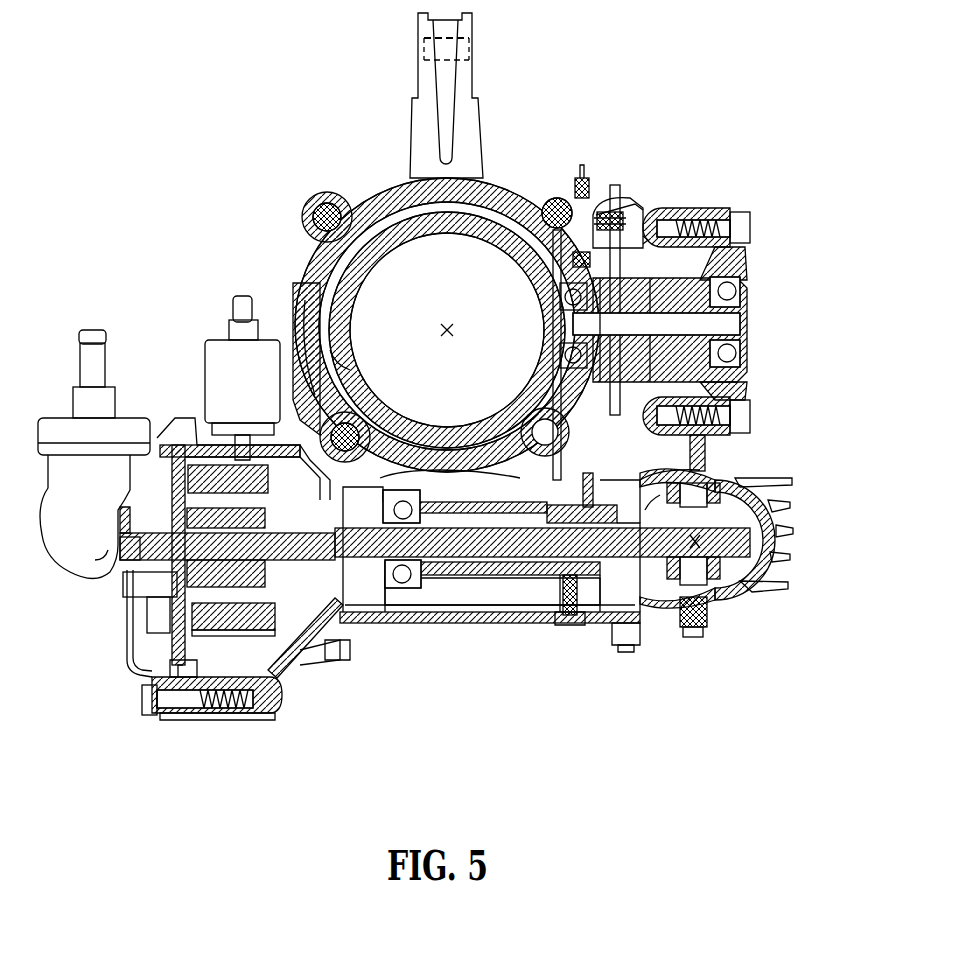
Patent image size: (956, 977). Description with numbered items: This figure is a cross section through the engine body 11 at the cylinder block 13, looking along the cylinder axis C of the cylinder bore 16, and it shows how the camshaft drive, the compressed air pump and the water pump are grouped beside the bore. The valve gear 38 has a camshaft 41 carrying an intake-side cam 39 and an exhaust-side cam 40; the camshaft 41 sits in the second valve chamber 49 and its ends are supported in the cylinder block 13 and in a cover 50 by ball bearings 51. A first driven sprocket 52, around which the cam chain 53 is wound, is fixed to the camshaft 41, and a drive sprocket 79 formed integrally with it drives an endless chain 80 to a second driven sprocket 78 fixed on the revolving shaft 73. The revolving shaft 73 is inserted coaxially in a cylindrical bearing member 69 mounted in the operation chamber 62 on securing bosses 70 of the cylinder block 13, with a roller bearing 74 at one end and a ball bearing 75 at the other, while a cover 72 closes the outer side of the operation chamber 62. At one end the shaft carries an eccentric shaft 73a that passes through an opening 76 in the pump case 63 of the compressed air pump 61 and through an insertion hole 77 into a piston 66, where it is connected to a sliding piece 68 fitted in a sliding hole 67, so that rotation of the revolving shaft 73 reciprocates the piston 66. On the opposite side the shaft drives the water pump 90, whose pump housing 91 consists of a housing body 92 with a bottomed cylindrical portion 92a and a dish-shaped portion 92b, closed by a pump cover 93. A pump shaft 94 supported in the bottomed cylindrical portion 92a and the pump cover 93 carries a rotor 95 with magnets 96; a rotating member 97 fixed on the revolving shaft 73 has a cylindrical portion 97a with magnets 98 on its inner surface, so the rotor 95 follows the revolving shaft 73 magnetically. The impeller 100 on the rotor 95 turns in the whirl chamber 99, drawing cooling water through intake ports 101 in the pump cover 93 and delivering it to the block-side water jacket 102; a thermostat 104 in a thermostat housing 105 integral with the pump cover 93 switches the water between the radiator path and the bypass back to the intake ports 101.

The engine body 11 is at (494, 176).
The cylinder block 13 is at (360, 195).
The cylinder bore 16 is at (375, 268).
The valve gear 38 is at (640, 208).
The intake-side cam 39 is at (655, 240).
The exhaust-side cam 40 is at (752, 383).
The camshaft 41 is at (703, 212).
The second valve chamber 49 is at (592, 205).
The cover 50 is at (745, 275).
The ball bearings 51 is at (735, 355).
The first driven sprocket 52 is at (612, 210).
The cam chain 53 is at (634, 272).
The compressed air pump 61 is at (748, 596).
The operation chamber 62 is at (495, 610).
The pump case 63 is at (748, 482).
The piston 66 is at (755, 562).
The sliding hole 67 is at (722, 488).
The sliding piece 68 is at (762, 506).
The bearing member 69 is at (525, 580).
The securing bosses 70 is at (445, 470).
The cover 72 is at (412, 615).
The revolving shaft 73 is at (450, 555).
The eccentric shaft 73a is at (748, 536).
The roller bearing 74 is at (572, 612).
The ball bearing 75 is at (400, 588).
The opening 76 is at (680, 612).
The insertion hole 77 is at (655, 505).
The second driven sprocket 78 is at (505, 485).
The drive sprocket 79 is at (545, 270).
The endless chain 80 is at (625, 650).
The water pump 90 is at (158, 420).
The pump housing 91 is at (96, 760).
The housing body 92 is at (143, 690).
The bottomed cylindrical portion 92a is at (348, 358).
The dish-shaped portion 92b is at (258, 715).
The pump cover 93 is at (140, 672).
The pump shaft 94 is at (240, 600).
The rotor 95 is at (282, 680).
The magnets 96 is at (255, 525).
The rotating member 97 is at (370, 390).
The cylindrical portion 97a is at (198, 465).
The magnets 98 is at (218, 460).
The whirl chamber 99 is at (135, 585).
The impeller 100 is at (155, 615).
The intake ports 101 is at (118, 522).
The block-side water jacket 102 is at (393, 215).
The thermostat 104 is at (90, 415).
The thermostat housing 105 is at (100, 575).
The cylinder axis C is at (448, 322).